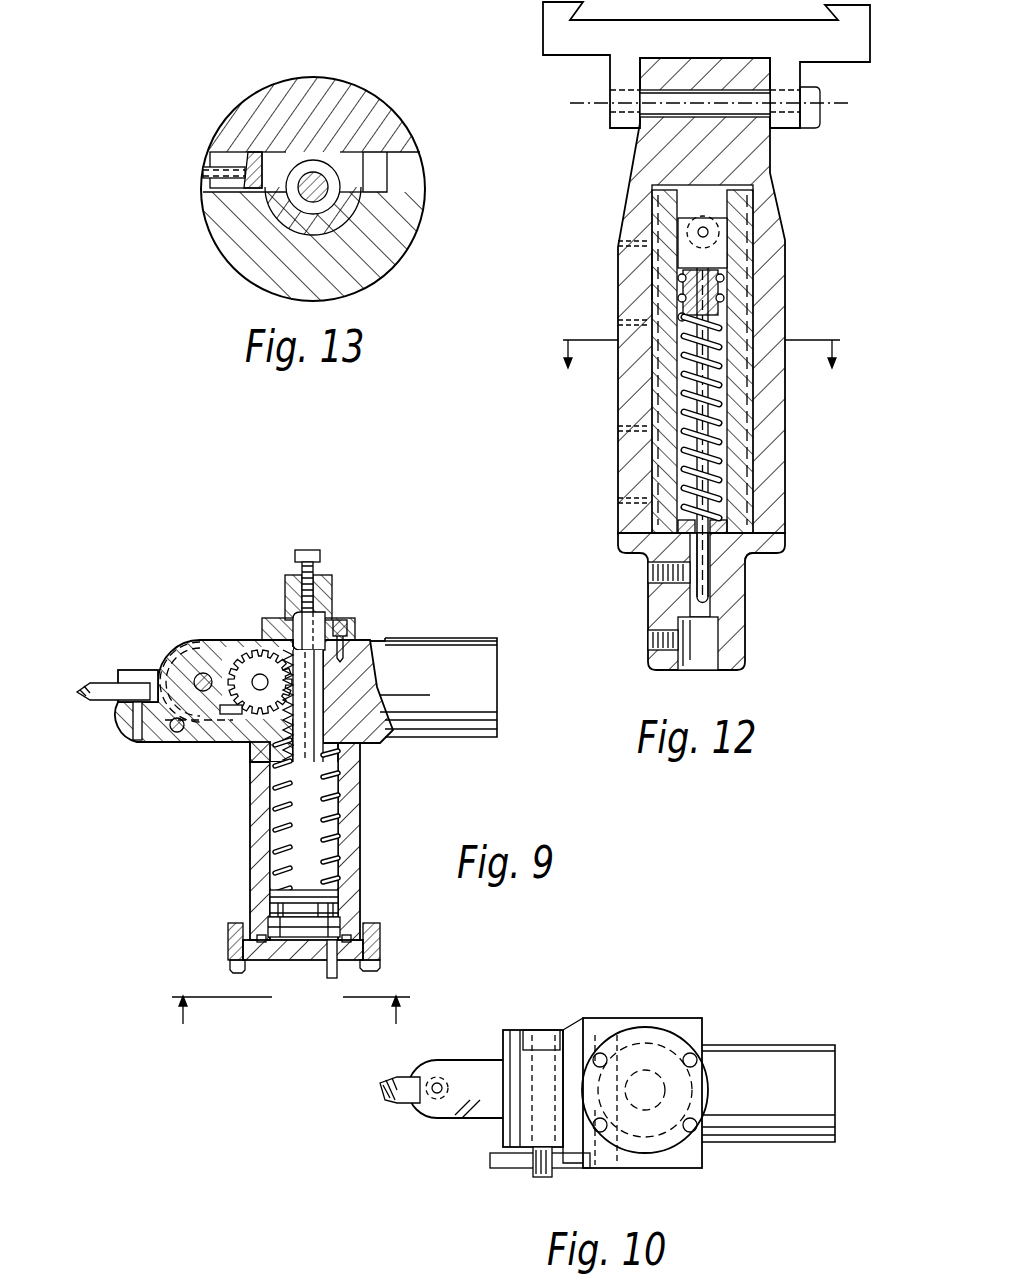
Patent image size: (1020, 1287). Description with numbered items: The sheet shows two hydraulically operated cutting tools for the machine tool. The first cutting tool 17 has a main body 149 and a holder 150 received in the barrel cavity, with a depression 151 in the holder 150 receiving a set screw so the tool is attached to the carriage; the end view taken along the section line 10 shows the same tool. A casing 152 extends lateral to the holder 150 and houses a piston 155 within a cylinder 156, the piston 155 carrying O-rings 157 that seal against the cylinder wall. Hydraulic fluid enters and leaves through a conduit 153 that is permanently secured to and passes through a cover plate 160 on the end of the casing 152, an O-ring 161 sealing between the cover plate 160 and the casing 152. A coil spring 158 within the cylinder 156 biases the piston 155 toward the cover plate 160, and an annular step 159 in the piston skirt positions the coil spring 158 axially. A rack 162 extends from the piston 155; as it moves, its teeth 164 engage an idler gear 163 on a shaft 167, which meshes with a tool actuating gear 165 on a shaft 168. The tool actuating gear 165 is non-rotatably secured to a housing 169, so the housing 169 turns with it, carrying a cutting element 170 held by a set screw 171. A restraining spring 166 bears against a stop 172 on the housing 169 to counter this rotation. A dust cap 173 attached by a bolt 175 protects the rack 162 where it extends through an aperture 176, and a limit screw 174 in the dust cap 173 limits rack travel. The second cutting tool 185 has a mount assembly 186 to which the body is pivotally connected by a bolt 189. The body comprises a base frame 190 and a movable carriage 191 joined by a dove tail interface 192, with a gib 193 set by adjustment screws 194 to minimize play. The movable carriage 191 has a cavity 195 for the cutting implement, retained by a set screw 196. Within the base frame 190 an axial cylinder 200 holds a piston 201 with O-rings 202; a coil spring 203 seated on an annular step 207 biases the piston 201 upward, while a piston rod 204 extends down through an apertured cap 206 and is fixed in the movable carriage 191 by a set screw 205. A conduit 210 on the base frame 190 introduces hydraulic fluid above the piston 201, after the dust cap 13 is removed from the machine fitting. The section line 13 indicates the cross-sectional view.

In FIG. 9, the housing body 149 is at (370, 705).
In FIG. 10, the housing body 149 is at (625, 1018).
In FIG. 9, the holder 150 is at (462, 640).
In FIG. 10, the holder 150 is at (808, 1045).
In FIG. 9, the depression 151 is at (400, 640).
In FIG. 9, the casing 152 is at (358, 820).
In FIG. 9, the conduit 153 is at (337, 965).
In FIG. 9, the piston 155 is at (340, 905).
In FIG. 9, the cylinder 156 is at (340, 850).
In FIG. 10, the cylinder 156 is at (655, 1050).
In FIG. 9, the O-rings 157 is at (268, 925).
In FIG. 9, the coil spring 158 is at (336, 790).
In FIG. 9, the annular step 159 is at (268, 895).
In FIG. 9, the cover plate 160 is at (380, 956).
In FIG. 10, the cover plate 160 is at (600, 1022).
In FIG. 9, the O-ring 161 is at (352, 937).
In FIG. 9, the rack 162 is at (318, 770).
In FIG. 9, the idler gear 163 is at (245, 658).
In FIG. 9, the teeth 164 is at (235, 715).
In FIG. 9, the tool actuating gear 165 is at (185, 660).
In FIG. 10, the restraining spring 166 is at (508, 1152).
In FIG. 9, the shaft 167 is at (228, 742).
In FIG. 9, the shaft 168 is at (203, 673).
In FIG. 10, the shaft 168 is at (550, 1160).
In FIG. 9, the housing 169 is at (135, 672).
In FIG. 10, the housing 169 is at (478, 1060).
In FIG. 9, the cutting element 170 is at (86, 692).
In FIG. 10, the cutting element 170 is at (383, 1100).
In FIG. 9, the set screw 171 is at (125, 740).
In FIG. 10, the set screw 171 is at (433, 1082).
In FIG. 9, the stop 172 is at (175, 730).
In FIG. 9, the dust cap 173 is at (333, 592).
In FIG. 9, the limit screw 174 is at (318, 552).
In FIG. 9, the bolt 175 is at (345, 624).
In FIG. 9, the aperture 176 is at (293, 625).
In FIG. 9, the cutting tool 17 is at (143, 850).
In FIG. 9, the section line 10- 10 is at (291, 1026).
In FIG. 12, the cutting tool 185 is at (565, 290).
In FIG. 12, the mount assembly 186 is at (870, 40).
In FIG. 12, the bolt 189 is at (820, 128).
In FIG. 13, the base frame 190 is at (375, 95).
In FIG. 12, the base frame 190 is at (775, 160).
In FIG. 13, the movable carriage 191 is at (420, 215).
In FIG. 12, the movable carriage 191 is at (780, 545).
In FIG. 13, the dove tail interface 192 is at (420, 158).
In FIG. 13, the gib 193 is at (250, 152).
In FIG. 12, the gib 193 is at (655, 285).
In FIG. 13, the adjustment screws 194 is at (203, 172).
In FIG. 12, the adjustment screws 194 is at (618, 243).
In FIG. 12, the cavity 195 is at (700, 670).
In FIG. 12, the set screw 196 is at (648, 640).
In FIG. 12, the cylinder 200 is at (708, 430).
In FIG. 12, the piston 201 is at (718, 300).
In FIG. 12, the O-rings 202 is at (724, 278).
In FIG. 12, the coil spring 203 is at (705, 400).
In FIG. 12, the piston rod 204 is at (708, 585).
In FIG. 12, the set screw 205 is at (648, 572).
In FIG. 12, the apertured cap 206 is at (748, 560).
In FIG. 12, the annular step 207 is at (722, 318).
In FIG. 12, the conduit 210 is at (705, 228).
In FIG. 12, the dust cap 13 is at (700, 367).